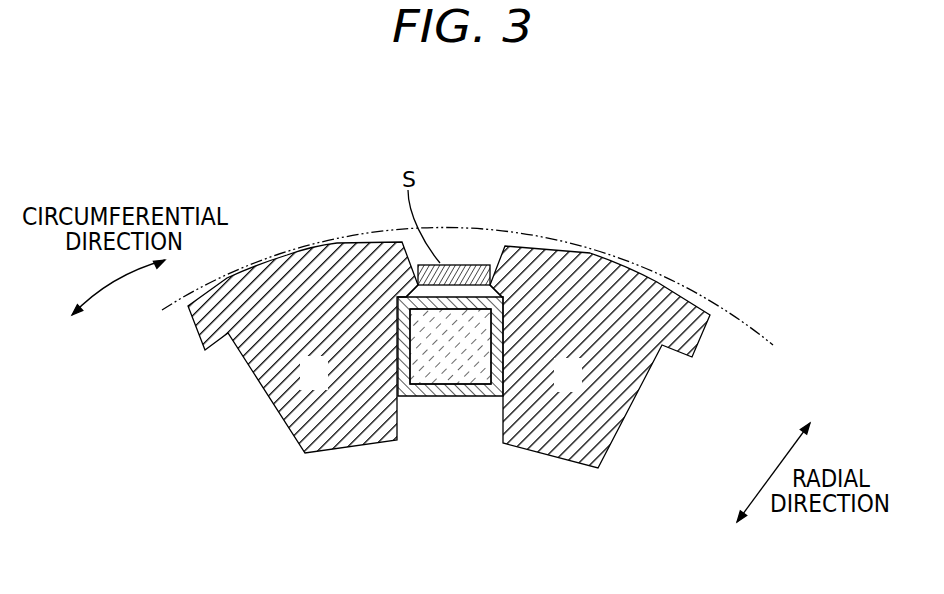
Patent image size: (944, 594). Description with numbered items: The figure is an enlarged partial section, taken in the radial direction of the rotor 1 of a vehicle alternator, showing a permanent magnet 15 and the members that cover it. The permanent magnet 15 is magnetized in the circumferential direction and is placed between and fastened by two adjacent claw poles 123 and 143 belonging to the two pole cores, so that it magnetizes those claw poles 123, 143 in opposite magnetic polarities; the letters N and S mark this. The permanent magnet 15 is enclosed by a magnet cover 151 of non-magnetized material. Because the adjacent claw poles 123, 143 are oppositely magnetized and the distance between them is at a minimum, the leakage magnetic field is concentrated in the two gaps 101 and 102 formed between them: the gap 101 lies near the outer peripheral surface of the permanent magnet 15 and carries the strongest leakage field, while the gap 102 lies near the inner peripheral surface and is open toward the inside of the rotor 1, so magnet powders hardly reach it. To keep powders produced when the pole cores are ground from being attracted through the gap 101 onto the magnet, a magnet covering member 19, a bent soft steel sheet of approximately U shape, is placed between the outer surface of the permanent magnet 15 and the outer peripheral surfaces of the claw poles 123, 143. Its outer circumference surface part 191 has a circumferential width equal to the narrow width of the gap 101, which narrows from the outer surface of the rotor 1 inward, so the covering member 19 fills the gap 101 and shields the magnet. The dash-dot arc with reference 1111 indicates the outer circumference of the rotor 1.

The rotor 1 is at (360, 231).
The gap 101 is at (443, 297).
The gap 102 is at (445, 405).
The claw pole 123 is at (280, 275).
The claw pole 143 is at (603, 260).
The magnet covering member 19 is at (462, 264).
The outer circumference surface part 191 is at (493, 263).
The permanent magnet 15 is at (467, 350).
The magnet cover 151 is at (425, 397).
The rotor outer circumference 1111 is at (748, 333).